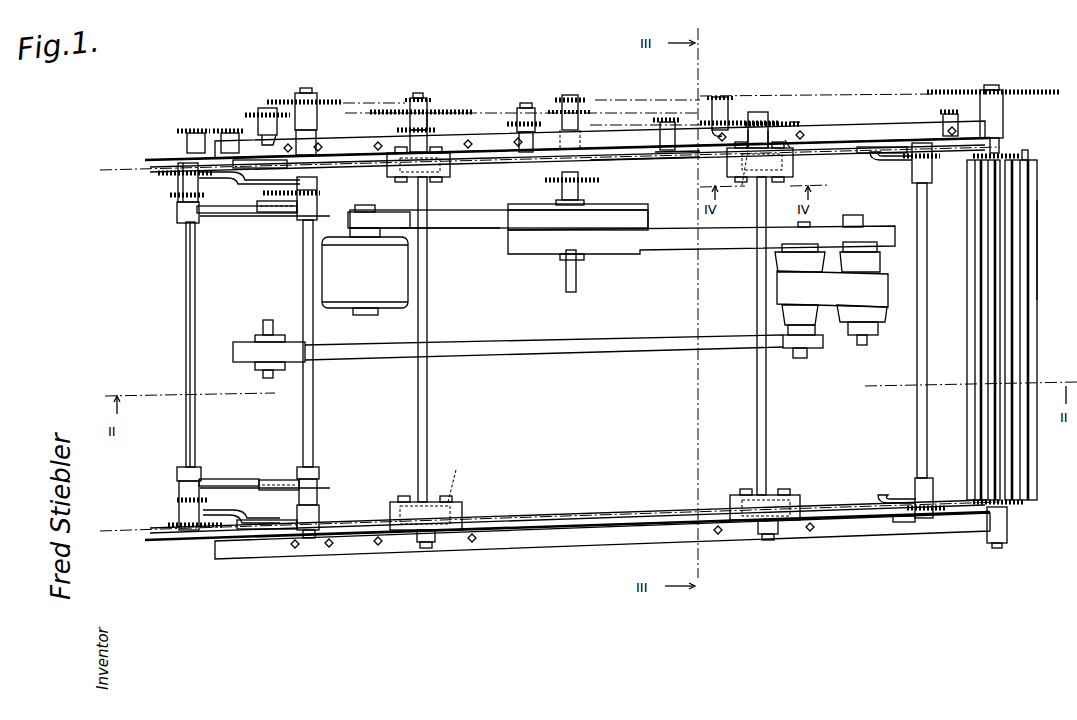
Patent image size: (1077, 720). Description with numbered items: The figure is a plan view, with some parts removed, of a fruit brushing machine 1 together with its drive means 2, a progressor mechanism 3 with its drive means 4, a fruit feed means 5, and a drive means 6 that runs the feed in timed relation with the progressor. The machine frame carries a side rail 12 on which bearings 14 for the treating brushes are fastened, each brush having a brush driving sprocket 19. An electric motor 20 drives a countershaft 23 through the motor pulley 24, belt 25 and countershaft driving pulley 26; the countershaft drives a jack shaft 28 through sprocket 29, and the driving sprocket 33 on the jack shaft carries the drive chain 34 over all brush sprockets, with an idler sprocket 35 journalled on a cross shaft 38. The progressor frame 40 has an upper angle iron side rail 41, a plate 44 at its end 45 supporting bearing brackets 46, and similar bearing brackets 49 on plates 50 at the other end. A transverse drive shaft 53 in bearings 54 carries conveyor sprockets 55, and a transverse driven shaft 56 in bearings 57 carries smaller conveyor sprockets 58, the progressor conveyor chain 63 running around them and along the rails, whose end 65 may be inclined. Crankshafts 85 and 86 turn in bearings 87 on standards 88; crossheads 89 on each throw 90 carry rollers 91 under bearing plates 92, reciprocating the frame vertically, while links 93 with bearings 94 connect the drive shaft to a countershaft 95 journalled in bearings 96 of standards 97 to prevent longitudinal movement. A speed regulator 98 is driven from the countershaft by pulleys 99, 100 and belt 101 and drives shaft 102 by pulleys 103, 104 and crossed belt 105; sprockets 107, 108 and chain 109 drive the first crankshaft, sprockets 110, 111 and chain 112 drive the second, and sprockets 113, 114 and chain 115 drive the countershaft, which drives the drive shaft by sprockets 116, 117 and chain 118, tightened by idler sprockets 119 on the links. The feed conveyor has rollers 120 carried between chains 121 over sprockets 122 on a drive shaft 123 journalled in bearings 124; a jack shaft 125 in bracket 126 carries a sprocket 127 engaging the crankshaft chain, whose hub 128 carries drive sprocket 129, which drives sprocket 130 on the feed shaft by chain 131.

The fruit brushing machine 1 is at (184, 302).
The drive means 2 is at (476, 232).
The progressor mechanism 3 is at (160, 178).
The drive means 4 is at (240, 340).
The fruit feed means 5 is at (1040, 238).
The drive means 6 is at (1014, 88).
The side rail 12 is at (866, 532).
The bearing 14 is at (672, 152).
The brush driving sprocket 19 is at (225, 130).
The electric motor 20 is at (346, 298).
The countershaft 23 is at (566, 286).
The motor pulley 24 is at (385, 214).
The belt 25 is at (448, 222).
The countershaft driving pulley 26 is at (578, 209).
The jack shaft 28 is at (571, 122).
The sprocket 29 is at (588, 182).
The driving sprocket 33 is at (577, 108).
The drive chain 34 is at (616, 102).
The idler sprocket 35 is at (540, 120).
The cross shaft 38 is at (524, 104).
The progressor frame 40 is at (498, 158).
The upper angle iron side rail 41 is at (640, 165).
The plate 44 is at (260, 166).
The end 45 is at (272, 530).
The bearing bracket 46 is at (238, 182).
The bearing bracket 49 is at (882, 160).
The plate 50 is at (876, 147).
The transverse drive shaft 53 is at (186, 344).
The bearing 54 is at (170, 195).
The conveyor sprocket 55 is at (158, 173).
The transverse driven shaft 56 is at (927, 272).
The bearing 57 is at (932, 176).
The conveyor sprocket 58 is at (940, 157).
The progressor conveyor chain 63 is at (830, 158).
The end 65 is at (905, 522).
The crankshaft 85 is at (420, 96).
The crankshaft 86 is at (795, 120).
The bearing 87 is at (765, 120).
The standard 88 is at (392, 160).
The crosshead 89 is at (452, 172).
The throw 90 is at (428, 324).
The roller 91 is at (601, 326).
The bearing plate 92 is at (420, 172).
The link 93 is at (234, 214).
The bearing 94 is at (177, 214).
The countershaft 95 is at (303, 265).
The bearing 96 is at (304, 150).
The standard 97 is at (320, 143).
The speed regulator 98 is at (845, 325).
The pulley 99 is at (622, 244).
The pulley 100 is at (877, 248).
The belt 101 is at (718, 242).
The shaft 102 is at (262, 334).
The pulley 103 is at (250, 362).
The pulley 104 is at (777, 316).
The crossed belt 105 is at (560, 344).
The sprocket 107 is at (255, 108).
The sprocket 108 is at (427, 101).
The chain 109 is at (356, 110).
The sprocket 110 is at (445, 110).
The sprocket 111 is at (790, 140).
The chain 112 is at (630, 128).
The sprocket 113 is at (438, 128).
The sprocket 114 is at (326, 98).
The chain 115 is at (388, 100).
The sprocket 116 is at (322, 193).
The sprocket 117 is at (178, 200).
The chain 118 is at (248, 214).
The idler sprocket 119 is at (275, 212).
The roller 120 is at (1000, 300).
The chain 121 is at (1068, 156).
The sprocket 122 is at (1015, 505).
The drive shaft 123 is at (1000, 145).
The bearing 124 is at (1004, 128).
The jack shaft 125 is at (720, 94).
The bracket 126 is at (718, 136).
The sprocket 127 is at (704, 120).
The hub 128 is at (742, 125).
The drive sprocket 129 is at (748, 118).
The sprocket 130 is at (950, 92).
The chain 131 is at (876, 94).